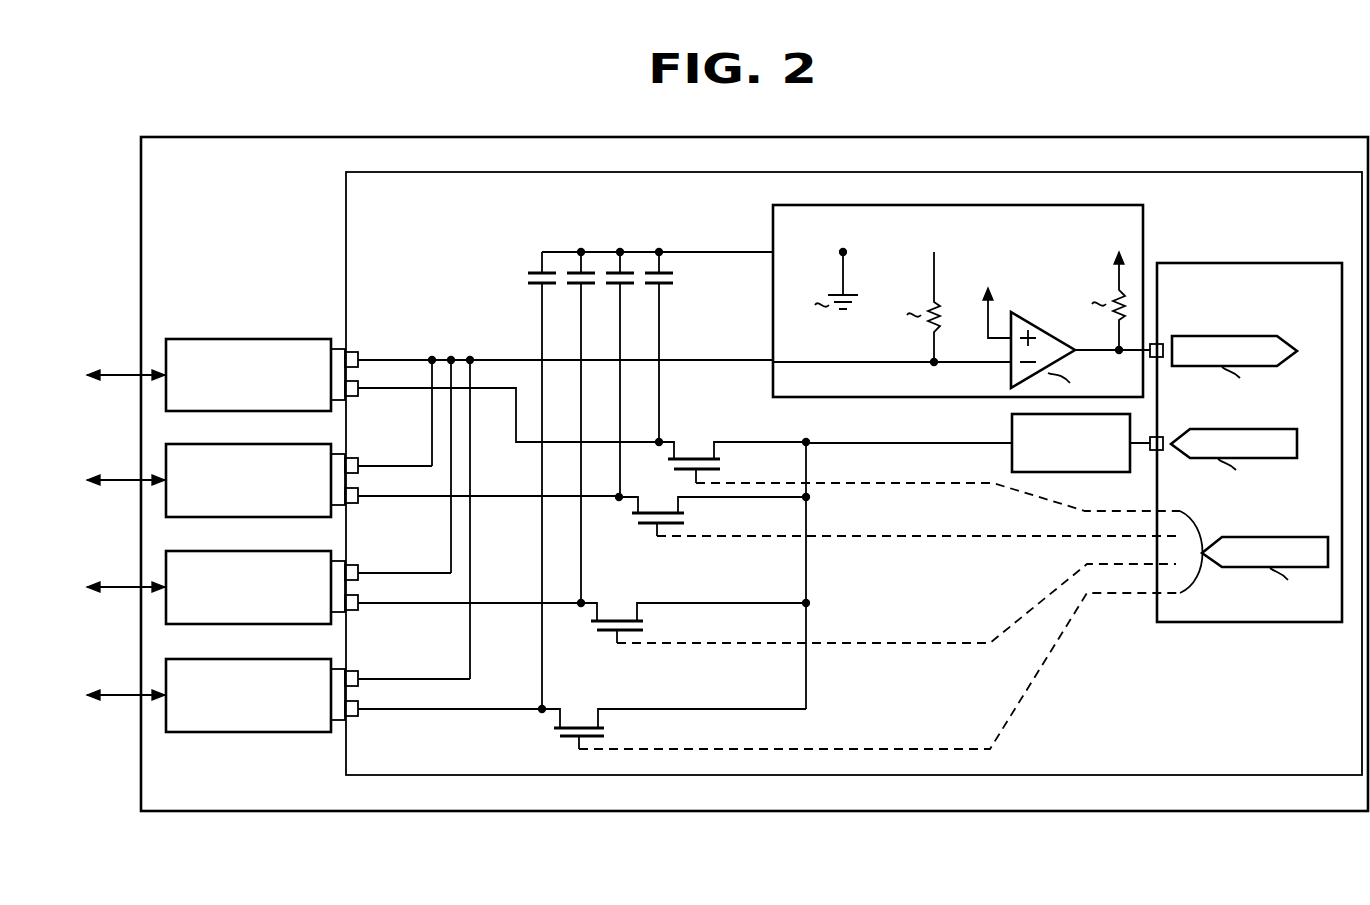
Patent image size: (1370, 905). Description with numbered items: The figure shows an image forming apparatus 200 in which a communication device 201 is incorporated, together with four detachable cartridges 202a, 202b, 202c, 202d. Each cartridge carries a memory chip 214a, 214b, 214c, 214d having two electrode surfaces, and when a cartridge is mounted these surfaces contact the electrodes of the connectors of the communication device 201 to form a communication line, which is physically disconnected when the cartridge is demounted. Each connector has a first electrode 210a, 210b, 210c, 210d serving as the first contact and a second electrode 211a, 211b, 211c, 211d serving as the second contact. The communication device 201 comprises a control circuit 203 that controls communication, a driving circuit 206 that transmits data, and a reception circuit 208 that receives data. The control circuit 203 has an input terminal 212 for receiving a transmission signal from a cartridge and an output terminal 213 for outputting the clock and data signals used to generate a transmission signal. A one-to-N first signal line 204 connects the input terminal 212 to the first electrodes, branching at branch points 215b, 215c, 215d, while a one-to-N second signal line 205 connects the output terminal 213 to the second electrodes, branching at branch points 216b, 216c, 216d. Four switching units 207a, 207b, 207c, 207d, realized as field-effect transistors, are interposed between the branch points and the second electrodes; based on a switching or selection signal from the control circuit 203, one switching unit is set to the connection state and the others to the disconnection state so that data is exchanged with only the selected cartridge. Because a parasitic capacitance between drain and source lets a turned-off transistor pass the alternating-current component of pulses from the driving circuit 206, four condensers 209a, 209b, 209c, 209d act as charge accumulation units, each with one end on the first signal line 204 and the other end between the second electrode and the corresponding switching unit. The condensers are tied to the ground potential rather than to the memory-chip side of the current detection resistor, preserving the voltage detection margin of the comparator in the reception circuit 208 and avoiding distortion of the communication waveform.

The image forming apparatus 200 is at (290, 137).
The communication device 201 is at (790, 168).
The cartridge 202a is at (232, 339).
The cartridge 202b is at (232, 444).
The cartridge 202c is at (232, 551).
The cartridge 202d is at (232, 659).
The control circuit 203 is at (1283, 263).
The first signal line 204 is at (722, 358).
The second signal line 205 is at (868, 441).
The driving circuit 206 is at (1062, 473).
The switching unit 207a is at (722, 465).
The switching unit 207b is at (685, 519).
The switching unit 207c is at (646, 626).
The switching unit 207d is at (606, 733).
The reception circuit 208 is at (1144, 236).
The condenser 209a is at (674, 280).
The condenser 209b is at (637, 278).
The condenser 209c is at (566, 278).
The condenser 209d is at (528, 280).
The first electrode 210a is at (370, 342).
The first electrode 210b is at (370, 448).
The first electrode 210c is at (370, 555).
The first electrode 210d is at (370, 661).
The second electrode 211a is at (358, 396).
The second electrode 211b is at (358, 504).
The second electrode 211c is at (358, 611).
The second electrode 211d is at (358, 717).
The input terminal 212 is at (1158, 358).
The output terminal 213 is at (1158, 451).
The memory chip 214a is at (336, 349).
The memory chip 214b is at (336, 454).
The memory chip 214c is at (336, 561).
The memory chip 214d is at (336, 669).
The branch point 215b is at (432, 356).
The branch point 215c is at (451, 357).
The branch point 215d is at (470, 358).
The branch point 216b is at (809, 445).
The branch point 216c is at (809, 499).
The branch point 216d is at (809, 603).